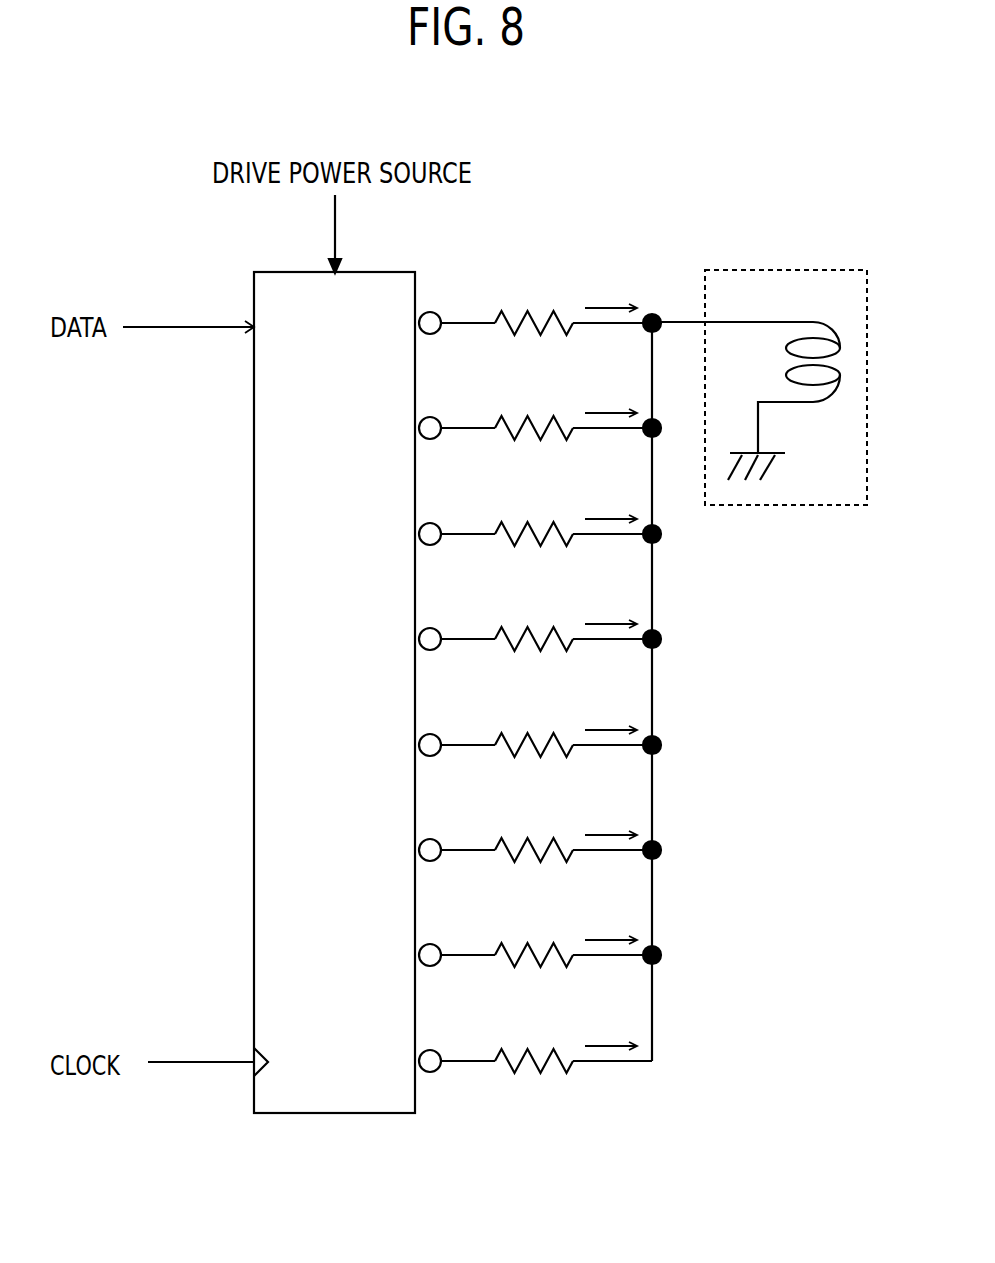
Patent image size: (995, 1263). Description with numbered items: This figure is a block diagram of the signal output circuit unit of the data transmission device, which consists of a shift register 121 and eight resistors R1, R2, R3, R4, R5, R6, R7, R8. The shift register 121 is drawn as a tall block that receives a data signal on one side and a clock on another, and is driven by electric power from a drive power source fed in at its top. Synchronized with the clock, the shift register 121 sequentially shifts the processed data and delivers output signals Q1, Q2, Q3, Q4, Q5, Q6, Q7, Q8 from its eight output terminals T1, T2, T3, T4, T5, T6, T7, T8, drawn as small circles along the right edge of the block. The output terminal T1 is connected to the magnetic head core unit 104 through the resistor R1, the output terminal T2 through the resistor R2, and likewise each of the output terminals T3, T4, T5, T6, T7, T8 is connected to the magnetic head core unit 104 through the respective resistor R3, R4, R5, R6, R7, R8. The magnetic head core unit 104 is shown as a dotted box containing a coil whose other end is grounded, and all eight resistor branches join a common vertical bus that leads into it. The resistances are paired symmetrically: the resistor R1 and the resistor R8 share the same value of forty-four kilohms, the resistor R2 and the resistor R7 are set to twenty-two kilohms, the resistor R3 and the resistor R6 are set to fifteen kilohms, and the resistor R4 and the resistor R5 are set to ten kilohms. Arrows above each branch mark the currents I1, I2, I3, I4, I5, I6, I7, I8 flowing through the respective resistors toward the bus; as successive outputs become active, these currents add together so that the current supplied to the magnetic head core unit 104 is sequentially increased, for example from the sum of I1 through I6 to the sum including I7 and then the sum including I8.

The magnetic head core unit 104 is at (778, 268).
The shift register 121 is at (351, 1113).
The output signal Q1 is at (372, 329).
The output signal Q2 is at (372, 434).
The output signal Q3 is at (372, 540).
The output signal Q4 is at (372, 645).
The output signal Q5 is at (372, 751).
The output signal Q6 is at (372, 856).
The output signal Q7 is at (372, 961).
The output signal Q8 is at (372, 1067).
The output terminal T1 is at (438, 311).
The output terminal T2 is at (438, 416).
The output terminal T3 is at (438, 522).
The output terminal T4 is at (438, 627).
The output terminal T5 is at (438, 733).
The output terminal T6 is at (438, 838).
The output terminal T7 is at (438, 943).
The output terminal T8 is at (438, 1049).
The resistor R1 is at (524, 309).
The resistor R2 is at (524, 414).
The resistor R3 is at (524, 520).
The resistor R4 is at (524, 625).
The resistor R5 is at (524, 731).
The resistor R6 is at (524, 836).
The resistor R7 is at (524, 941).
The resistor R8 is at (524, 1047).
The current I1 is at (611, 284).
The current I2 is at (611, 389).
The current I3 is at (611, 495).
The current I4 is at (611, 600).
The current I5 is at (611, 706).
The current I6 is at (611, 811).
The current I7 is at (611, 916).
The current I8 is at (611, 1022).